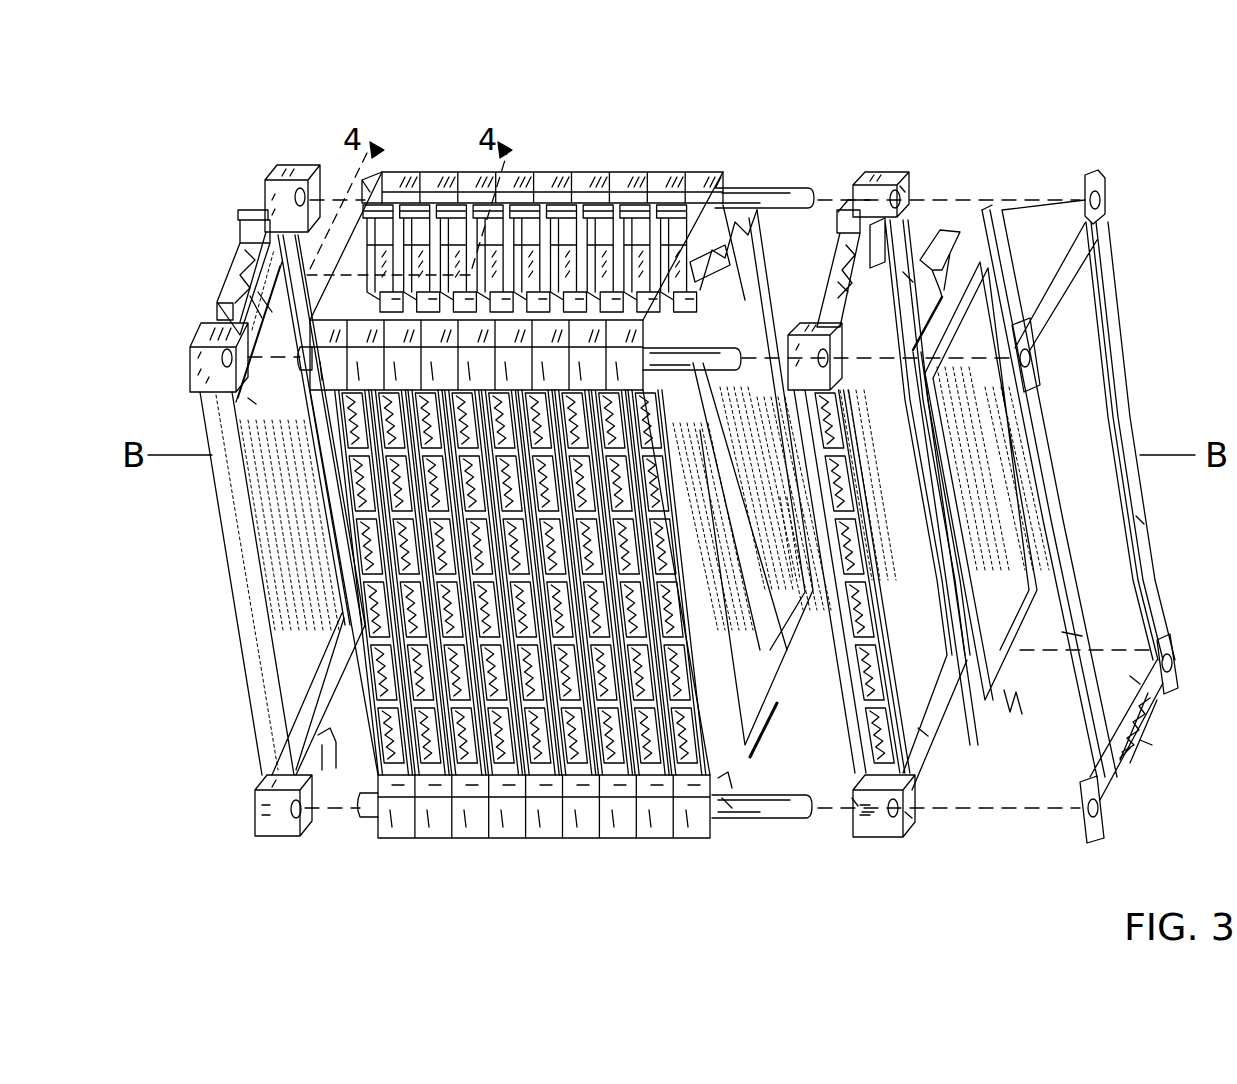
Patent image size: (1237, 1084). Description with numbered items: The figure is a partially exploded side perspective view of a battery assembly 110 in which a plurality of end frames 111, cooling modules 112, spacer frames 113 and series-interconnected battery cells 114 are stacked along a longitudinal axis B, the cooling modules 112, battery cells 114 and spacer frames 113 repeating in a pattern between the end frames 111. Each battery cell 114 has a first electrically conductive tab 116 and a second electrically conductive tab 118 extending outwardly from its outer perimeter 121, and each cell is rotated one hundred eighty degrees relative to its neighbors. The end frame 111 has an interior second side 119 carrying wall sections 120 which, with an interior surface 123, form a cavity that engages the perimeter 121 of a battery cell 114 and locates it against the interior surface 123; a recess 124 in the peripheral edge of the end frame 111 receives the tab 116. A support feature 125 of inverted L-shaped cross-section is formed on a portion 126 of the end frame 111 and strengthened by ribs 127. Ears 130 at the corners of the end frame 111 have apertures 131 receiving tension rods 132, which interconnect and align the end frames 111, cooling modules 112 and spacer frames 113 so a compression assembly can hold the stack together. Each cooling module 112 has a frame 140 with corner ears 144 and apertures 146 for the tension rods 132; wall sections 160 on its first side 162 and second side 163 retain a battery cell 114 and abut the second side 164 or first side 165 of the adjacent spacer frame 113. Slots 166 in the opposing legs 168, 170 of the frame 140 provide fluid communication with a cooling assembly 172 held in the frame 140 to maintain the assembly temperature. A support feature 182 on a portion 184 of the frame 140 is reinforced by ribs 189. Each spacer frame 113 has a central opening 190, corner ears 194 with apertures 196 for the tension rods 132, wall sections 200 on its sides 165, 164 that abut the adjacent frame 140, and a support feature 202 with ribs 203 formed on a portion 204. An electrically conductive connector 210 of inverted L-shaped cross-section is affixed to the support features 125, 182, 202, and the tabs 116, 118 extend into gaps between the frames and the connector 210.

The fuel cell stack assembly 110 is at (262, 125).
The end frame 111 is at (270, 178).
The cooling module 112 is at (620, 175).
The spacer frame 113 is at (455, 165).
The battery cell 114 is at (982, 200).
The first electrically conductive tab 116 is at (698, 228).
The second electrically conductive tab 118 is at (778, 692).
The second side 119 is at (297, 815).
The wall sections 120 is at (310, 250).
The outer perimeter 121 is at (936, 533).
The interior surface 123 is at (298, 600).
The recess 124 is at (300, 185).
The support feature 125 is at (262, 300).
The portion 126 is at (215, 308).
The ribs 127 is at (250, 300).
The ears 130 is at (190, 366).
The aperture 131 is at (253, 405).
The tension rod 132 is at (752, 190).
The frame 140 is at (845, 187).
The ears 144 is at (858, 830).
The aperture 146 is at (898, 186).
The wall sections 160 is at (855, 458).
The first side 162 is at (920, 730).
The second side 163 is at (853, 800).
The second side 164 is at (1075, 795).
The first side 165 is at (1170, 645).
The slots 166 is at (868, 814).
The leg 168 is at (866, 592).
The leg 170 is at (905, 275).
The cooling assembly 172 is at (580, 762).
The support feature 182 is at (846, 332).
The portion 184 is at (875, 172).
The ribs 189 is at (836, 290).
The opening 190 is at (1110, 430).
The ears 194 is at (1088, 170).
The aperture 196 is at (1102, 190).
The wall sections 200 is at (1030, 362).
The support feature 202 is at (772, 728).
The ribs 203 is at (1132, 765).
The portion 204 is at (730, 781).
The connector 210 is at (238, 258).